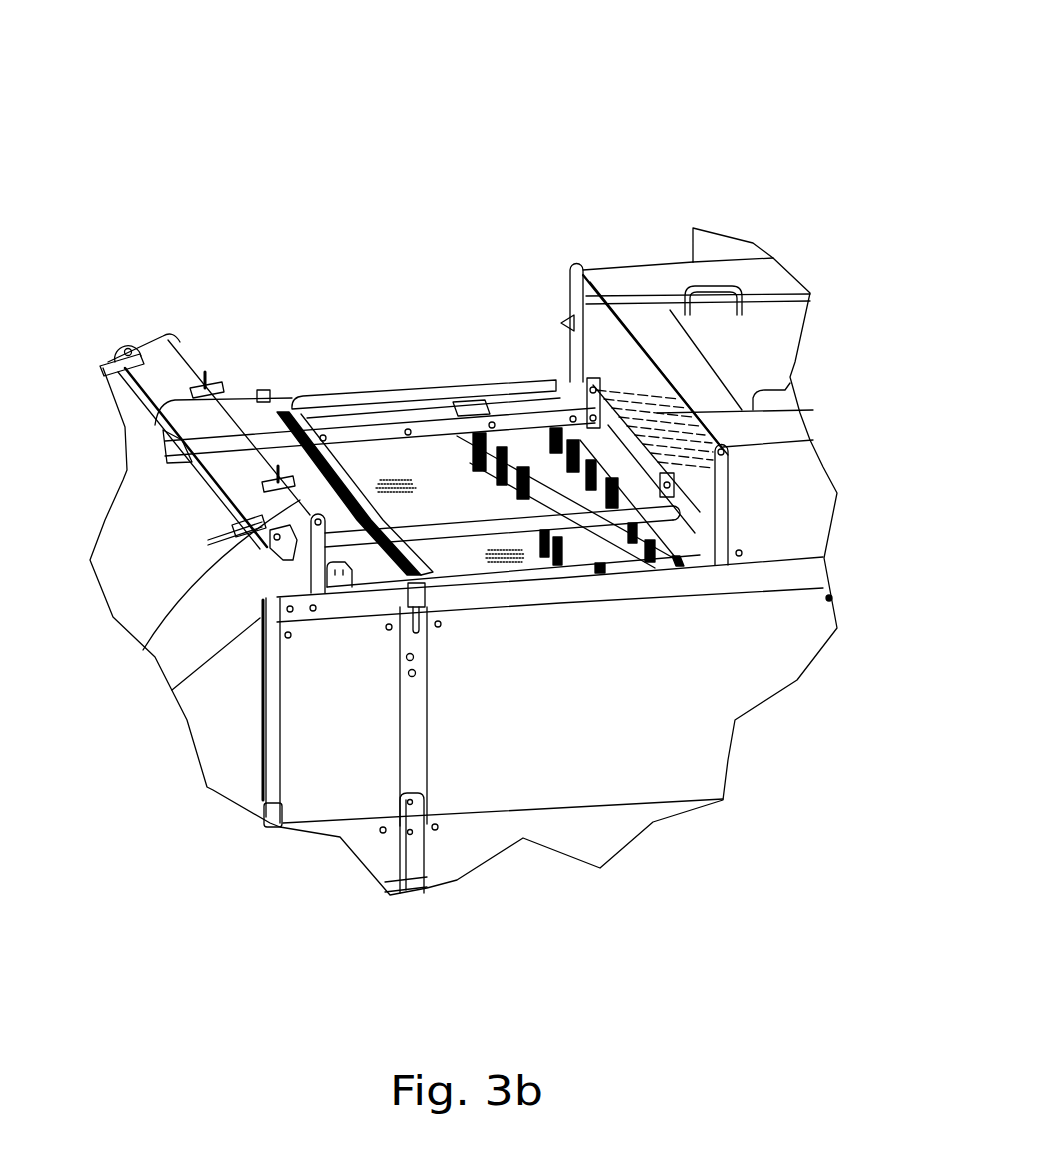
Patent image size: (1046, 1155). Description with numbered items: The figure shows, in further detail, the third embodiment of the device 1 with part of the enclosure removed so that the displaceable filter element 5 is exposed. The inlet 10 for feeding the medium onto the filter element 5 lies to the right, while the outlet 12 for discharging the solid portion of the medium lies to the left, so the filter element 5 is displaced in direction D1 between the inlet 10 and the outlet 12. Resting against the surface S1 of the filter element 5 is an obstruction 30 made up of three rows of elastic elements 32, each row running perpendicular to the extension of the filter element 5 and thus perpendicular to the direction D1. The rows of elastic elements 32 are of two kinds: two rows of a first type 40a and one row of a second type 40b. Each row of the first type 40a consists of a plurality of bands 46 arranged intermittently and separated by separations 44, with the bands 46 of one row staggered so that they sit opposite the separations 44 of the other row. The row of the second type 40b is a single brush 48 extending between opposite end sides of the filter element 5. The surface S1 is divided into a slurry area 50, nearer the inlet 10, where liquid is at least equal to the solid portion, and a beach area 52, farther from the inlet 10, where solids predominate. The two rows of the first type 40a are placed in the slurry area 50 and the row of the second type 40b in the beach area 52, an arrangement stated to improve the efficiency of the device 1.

The device 1 is at (166, 140).
The inlet 10 is at (512, 298).
The outlet 12 is at (298, 330).
The filter element 5 is at (300, 492).
The slurry area 50 is at (436, 383).
The beach area 52 is at (262, 402).
The surface of the filter element S1 is at (452, 500).
The separations 44 is at (480, 540).
The elastic elements 32 is at (499, 659).
The bands 46 is at (576, 535).
The single brush 48 is at (377, 563).
The row of a first type 40a is at (610, 595).
The row of a second type 40b is at (445, 610).
The obstruction 30 is at (658, 590).
The direction of displacement D1 is at (795, 577).